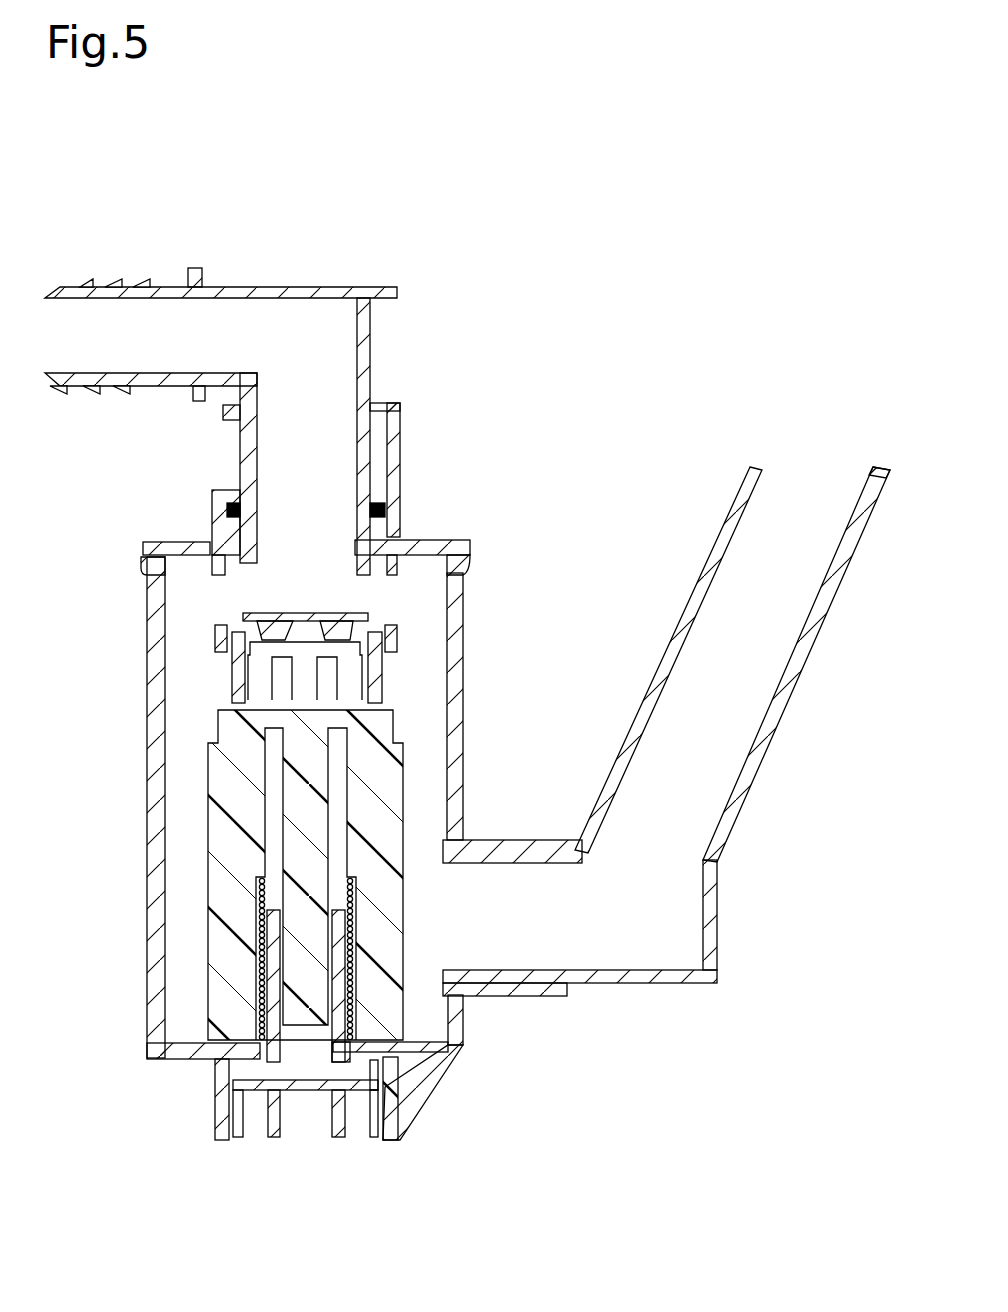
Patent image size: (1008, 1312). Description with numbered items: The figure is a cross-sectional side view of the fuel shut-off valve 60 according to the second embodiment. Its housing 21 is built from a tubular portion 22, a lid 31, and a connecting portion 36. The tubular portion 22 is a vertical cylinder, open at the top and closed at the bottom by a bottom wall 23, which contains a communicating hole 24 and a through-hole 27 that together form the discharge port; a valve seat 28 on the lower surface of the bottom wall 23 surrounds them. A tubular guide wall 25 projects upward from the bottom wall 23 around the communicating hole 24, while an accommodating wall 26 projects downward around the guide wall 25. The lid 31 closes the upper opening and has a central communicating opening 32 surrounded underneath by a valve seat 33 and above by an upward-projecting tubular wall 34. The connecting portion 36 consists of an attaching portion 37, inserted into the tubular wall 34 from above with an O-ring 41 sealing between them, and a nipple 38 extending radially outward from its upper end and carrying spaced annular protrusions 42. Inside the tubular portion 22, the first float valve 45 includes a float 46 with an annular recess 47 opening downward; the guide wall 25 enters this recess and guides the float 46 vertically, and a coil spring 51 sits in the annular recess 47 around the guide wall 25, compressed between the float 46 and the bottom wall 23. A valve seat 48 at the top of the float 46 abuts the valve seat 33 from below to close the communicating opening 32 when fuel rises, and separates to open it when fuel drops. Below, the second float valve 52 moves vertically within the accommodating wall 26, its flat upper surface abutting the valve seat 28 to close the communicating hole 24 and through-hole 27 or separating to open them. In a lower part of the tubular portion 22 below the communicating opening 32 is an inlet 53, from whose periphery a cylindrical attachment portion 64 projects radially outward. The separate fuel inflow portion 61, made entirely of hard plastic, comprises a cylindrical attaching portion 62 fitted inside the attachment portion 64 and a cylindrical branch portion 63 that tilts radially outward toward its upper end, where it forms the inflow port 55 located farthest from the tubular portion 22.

The housing 21 is at (272, 824).
The tubular portion 22 is at (272, 824).
The bottom wall 23 is at (185, 1060).
The communicating hole 24 is at (320, 1082).
The guide wall 25 is at (352, 955).
The accommodating wall 26 is at (215, 1125).
The through-hole 27 is at (272, 1100).
The valve seat 28 is at (395, 1095).
The lid 31 is at (195, 545).
The communicating opening 32 is at (262, 565).
The valve seat 33 is at (468, 575).
The tubular wall 34 is at (400, 440).
The connecting portion 36 is at (151, 468).
The attaching portion 37 is at (250, 455).
The nipple 38 is at (190, 400).
The O-ring 41 is at (385, 512).
The annular protrusions 42 is at (150, 281).
The first float valve 45 is at (244, 875).
The float 46 is at (334, 875).
The annular recess 47 is at (300, 822).
The valve seat 48 is at (265, 614).
The spring 51 is at (258, 1030).
The second float valve 52 is at (375, 1140).
The inlet 53 is at (450, 832).
The inflow port 55 is at (884, 466).
The fuel shut-off valve 60 is at (459, 711).
The fuel inflow portion 61 is at (732, 718).
The attaching portion 62 is at (717, 935).
The branch portion 63 is at (732, 664).
The attachment portion 64 is at (500, 997).